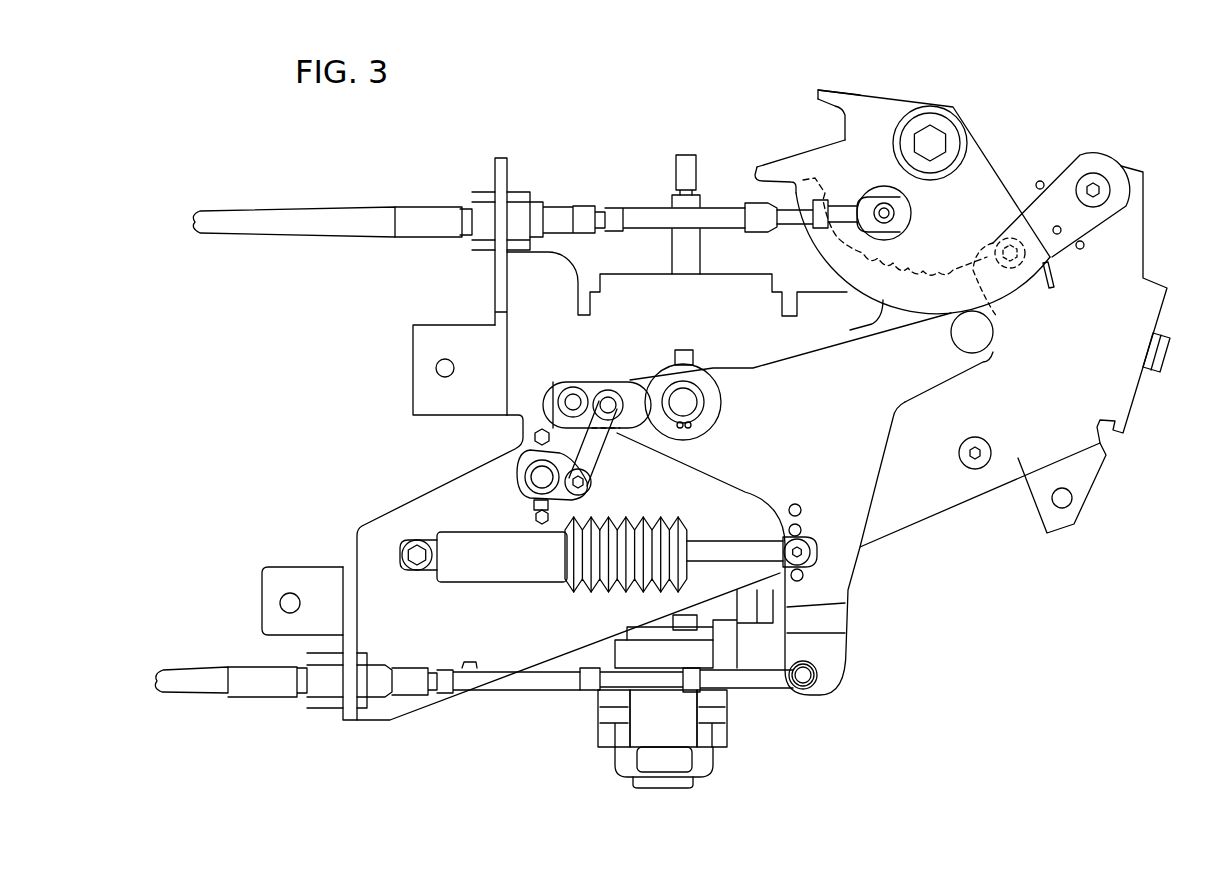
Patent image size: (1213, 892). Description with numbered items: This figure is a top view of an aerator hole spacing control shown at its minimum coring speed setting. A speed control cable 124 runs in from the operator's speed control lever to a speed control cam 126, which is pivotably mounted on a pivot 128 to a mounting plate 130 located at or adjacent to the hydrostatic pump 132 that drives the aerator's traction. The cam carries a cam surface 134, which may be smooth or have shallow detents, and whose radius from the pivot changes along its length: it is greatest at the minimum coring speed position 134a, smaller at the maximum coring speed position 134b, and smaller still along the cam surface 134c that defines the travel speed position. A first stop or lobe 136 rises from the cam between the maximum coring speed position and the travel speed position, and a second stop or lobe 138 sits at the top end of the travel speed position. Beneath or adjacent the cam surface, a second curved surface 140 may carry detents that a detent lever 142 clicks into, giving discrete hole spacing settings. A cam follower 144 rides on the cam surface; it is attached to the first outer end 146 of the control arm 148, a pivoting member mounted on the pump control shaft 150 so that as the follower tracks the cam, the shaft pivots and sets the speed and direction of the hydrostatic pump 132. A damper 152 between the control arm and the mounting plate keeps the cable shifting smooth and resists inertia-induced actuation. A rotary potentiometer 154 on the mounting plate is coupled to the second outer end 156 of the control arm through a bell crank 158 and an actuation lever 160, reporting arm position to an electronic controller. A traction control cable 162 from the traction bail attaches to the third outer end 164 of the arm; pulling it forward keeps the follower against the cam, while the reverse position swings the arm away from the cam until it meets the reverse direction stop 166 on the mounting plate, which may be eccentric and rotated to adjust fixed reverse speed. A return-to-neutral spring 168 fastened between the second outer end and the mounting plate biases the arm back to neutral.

The speed control cable 124 is at (350, 212).
The speed control cam 126 is at (900, 103).
The pivot 128 is at (932, 145).
The mounting plate 130 is at (933, 515).
The hydrostatic pump 132 is at (603, 737).
The cam surface 134 is at (900, 305).
The minimum coring speed position 134a is at (1030, 290).
The maximum coring speed position 134b is at (793, 187).
The cam surface (travel speed position) 134c is at (838, 128).
The first stop or lobe 136 is at (753, 166).
The second stop or lobe 138 is at (818, 88).
The second curved surface 140 is at (997, 317).
The detent lever 142 is at (1083, 230).
The cam follower 144 is at (972, 337).
The first outer end 146 is at (987, 358).
The control arm 148 is at (840, 565).
The pump control shaft 150 is at (690, 402).
The damper 152 is at (477, 573).
The rotary potentiometer 154 is at (520, 462).
The second outer end 156 is at (612, 375).
The bell crank 158 is at (532, 481).
The actuation lever 160 is at (598, 448).
The traction control cable 162 is at (198, 685).
The third outer end 164 is at (827, 690).
The reverse direction stop 166 is at (975, 470).
The return-to-neutral spring 168 is at (583, 385).